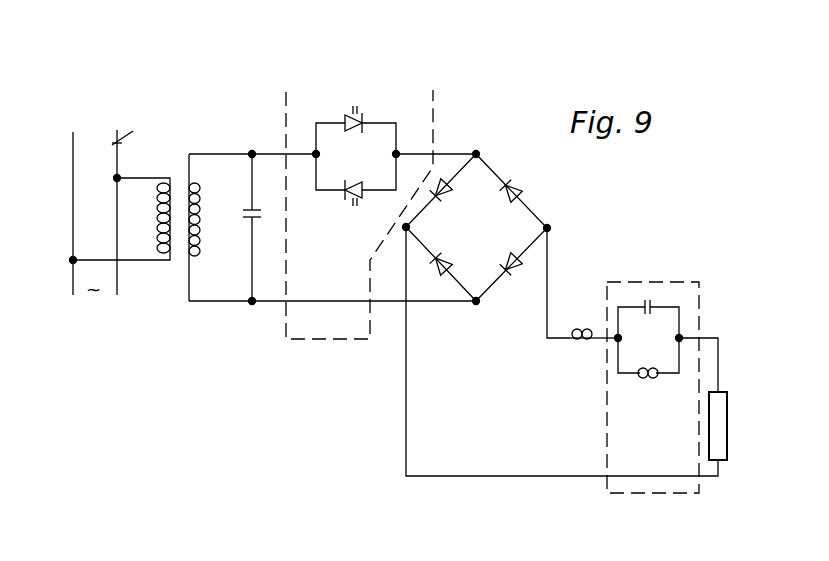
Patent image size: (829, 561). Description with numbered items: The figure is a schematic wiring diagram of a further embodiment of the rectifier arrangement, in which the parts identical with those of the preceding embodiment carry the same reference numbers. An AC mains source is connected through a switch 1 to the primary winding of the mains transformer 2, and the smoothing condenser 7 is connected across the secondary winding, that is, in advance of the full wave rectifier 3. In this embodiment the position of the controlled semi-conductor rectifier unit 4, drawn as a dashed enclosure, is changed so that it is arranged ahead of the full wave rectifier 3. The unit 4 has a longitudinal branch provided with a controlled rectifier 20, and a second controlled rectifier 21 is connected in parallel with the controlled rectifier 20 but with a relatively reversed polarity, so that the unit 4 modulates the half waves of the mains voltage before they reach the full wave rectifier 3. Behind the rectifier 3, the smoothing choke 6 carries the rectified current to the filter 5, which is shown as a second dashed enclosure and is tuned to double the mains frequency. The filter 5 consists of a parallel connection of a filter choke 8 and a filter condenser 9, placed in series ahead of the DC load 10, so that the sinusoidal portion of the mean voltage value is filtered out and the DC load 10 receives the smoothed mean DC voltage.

The switch 1 is at (128, 124).
The mains transformer 2 is at (184, 168).
The full wave rectifier 3 is at (481, 246).
The controlled semiconductor rectifier unit 4 is at (434, 94).
The filter 5 is at (650, 281).
The smoothing choke 6 is at (578, 329).
The smoothing condenser 7 is at (257, 213).
The filter choke 8 is at (650, 379).
The filter condenser 9 is at (648, 316).
The DC load 10 is at (723, 431).
The controlled rectifier 20 is at (348, 114).
The controlled rectifier 21 is at (360, 180).